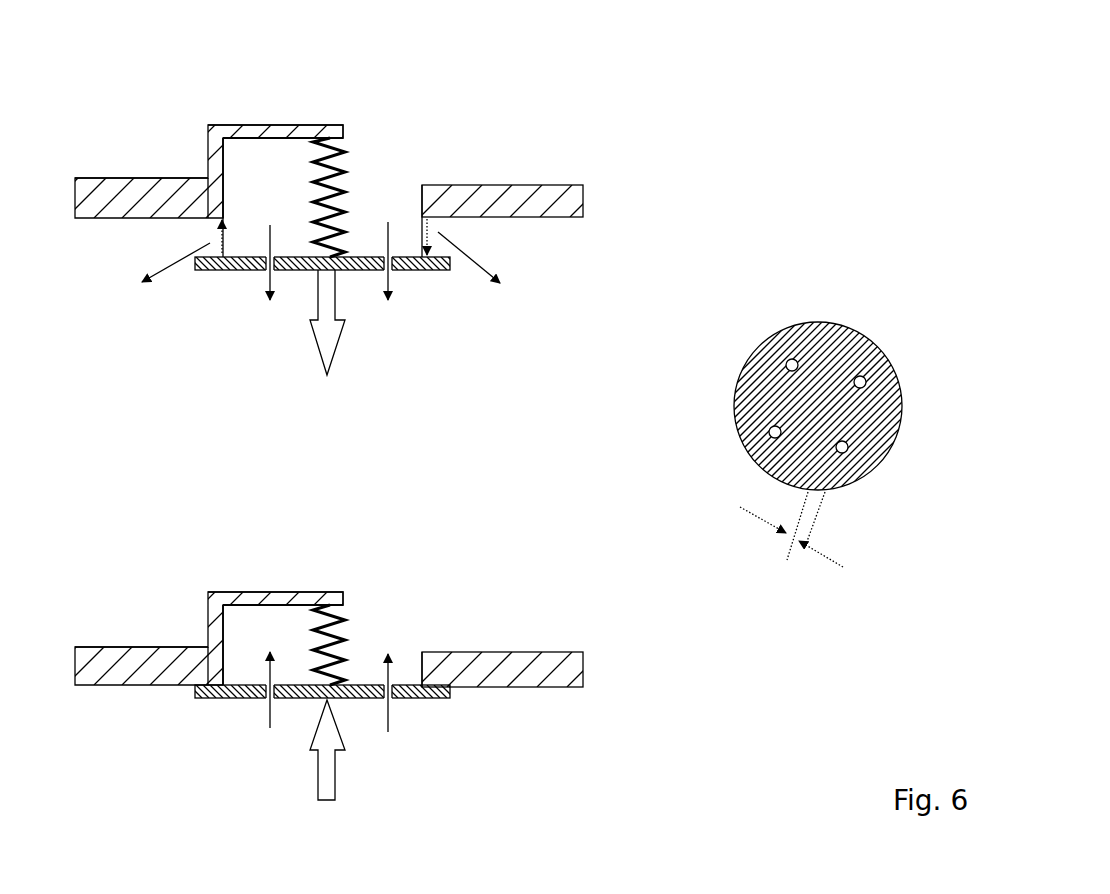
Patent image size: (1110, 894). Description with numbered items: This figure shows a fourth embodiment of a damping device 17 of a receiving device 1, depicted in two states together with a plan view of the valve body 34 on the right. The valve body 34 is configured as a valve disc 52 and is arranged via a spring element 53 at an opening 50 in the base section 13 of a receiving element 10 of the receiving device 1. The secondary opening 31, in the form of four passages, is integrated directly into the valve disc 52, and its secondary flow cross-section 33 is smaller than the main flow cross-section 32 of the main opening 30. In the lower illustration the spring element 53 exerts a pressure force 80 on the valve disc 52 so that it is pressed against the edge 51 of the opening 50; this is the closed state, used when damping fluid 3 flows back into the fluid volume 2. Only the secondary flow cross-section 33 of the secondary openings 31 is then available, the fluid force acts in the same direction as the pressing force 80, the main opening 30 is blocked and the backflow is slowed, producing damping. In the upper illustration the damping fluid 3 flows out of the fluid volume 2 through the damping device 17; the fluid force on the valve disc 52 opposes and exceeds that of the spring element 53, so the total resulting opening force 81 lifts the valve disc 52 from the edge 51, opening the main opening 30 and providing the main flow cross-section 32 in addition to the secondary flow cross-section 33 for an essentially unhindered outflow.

The receiving device 1 is at (172, 62).
The fluid volume 2 is at (301, 92).
The damping fluid 3 is at (272, 235).
The receiving element 10 is at (130, 178).
The base section 13 is at (494, 436).
The damping device 17 is at (397, 97).
The main opening 30 is at (210, 230).
The secondary opening 31 is at (258, 272).
The main flow cross-section 32 is at (222, 232).
The secondary flow cross-section 33 is at (790, 542).
The valve body 34 is at (210, 272).
The opening 50 is at (352, 200).
The edge 51 is at (212, 213).
The valve disc 52 is at (832, 332).
The spring element 53 is at (330, 140).
The pressure force 80 is at (338, 748).
The opening force 81 is at (338, 302).